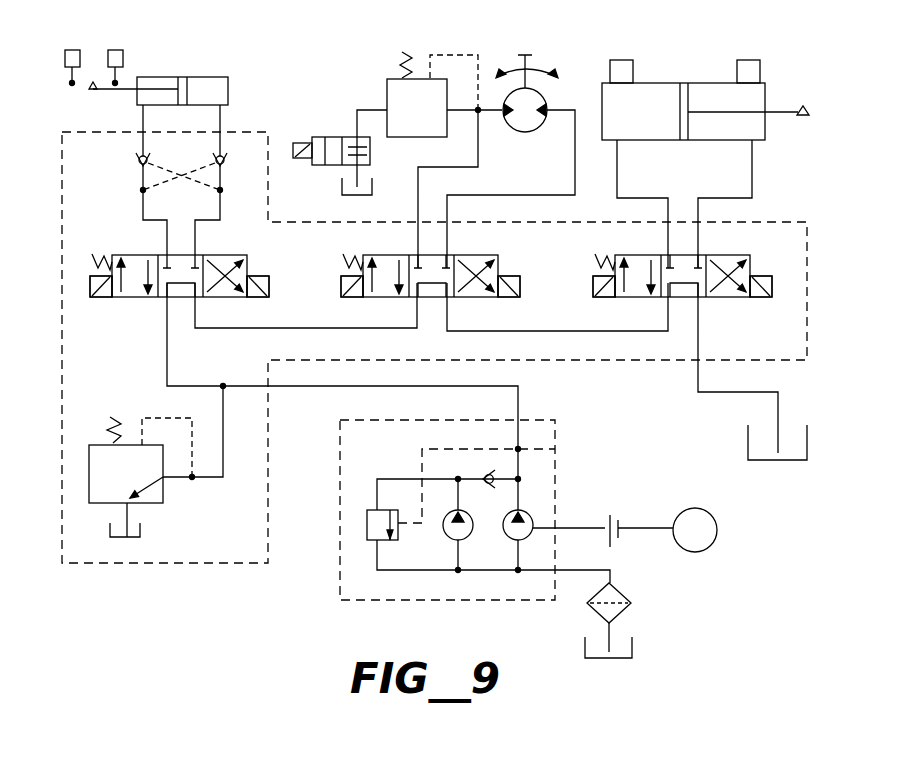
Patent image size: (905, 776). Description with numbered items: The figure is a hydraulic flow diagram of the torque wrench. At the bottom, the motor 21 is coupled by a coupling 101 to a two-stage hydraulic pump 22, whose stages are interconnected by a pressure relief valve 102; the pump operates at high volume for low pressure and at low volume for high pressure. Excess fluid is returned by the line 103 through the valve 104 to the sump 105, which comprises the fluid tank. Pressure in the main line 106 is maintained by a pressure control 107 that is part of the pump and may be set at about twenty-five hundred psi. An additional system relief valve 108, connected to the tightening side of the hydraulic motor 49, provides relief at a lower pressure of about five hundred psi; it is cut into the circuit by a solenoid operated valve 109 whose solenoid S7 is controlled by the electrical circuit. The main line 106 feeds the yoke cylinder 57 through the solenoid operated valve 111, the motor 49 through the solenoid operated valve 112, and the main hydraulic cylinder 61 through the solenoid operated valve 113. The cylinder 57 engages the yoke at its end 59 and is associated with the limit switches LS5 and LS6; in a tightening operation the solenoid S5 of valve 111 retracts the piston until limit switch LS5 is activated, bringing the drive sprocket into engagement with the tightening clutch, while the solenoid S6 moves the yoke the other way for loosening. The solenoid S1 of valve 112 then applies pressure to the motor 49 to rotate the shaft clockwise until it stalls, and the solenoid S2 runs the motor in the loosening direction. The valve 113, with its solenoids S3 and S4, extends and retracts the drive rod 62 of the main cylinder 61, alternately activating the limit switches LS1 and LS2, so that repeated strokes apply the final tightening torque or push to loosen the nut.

The yoke cylinder 57 is at (203, 75).
The yoke engagement end 59 is at (118, 92).
The limit switch LS6 is at (69, 57).
The limit switch LS5 is at (114, 57).
The limit switch LS2 is at (618, 62).
The limit switch LS1 is at (747, 62).
The main hydraulic cylinder 61 is at (662, 97).
The drive rod 62 is at (783, 117).
The system relief valve 108 is at (387, 87).
The solenoid operated valve 109 is at (320, 165).
The solenoid S7 is at (303, 139).
The hydraulic motor 49 is at (515, 133).
The solenoid operated valve 111 is at (253, 258).
The solenoid operated valve 112 is at (498, 258).
The solenoid operated valve 113 is at (752, 263).
The solenoid S1 is at (352, 301).
The solenoid S2 is at (508, 301).
The solenoid S3 is at (760, 303).
The solenoid S4 is at (604, 303).
The solenoid S5 is at (102, 299).
The solenoid S6 is at (258, 299).
The main line 106 is at (165, 355).
The pressure control 107 is at (165, 495).
The line 103 is at (422, 462).
The pressure relief valve 102 is at (493, 473).
The valve 104 is at (367, 523).
The two-stage hydraulic pump 22 is at (462, 541).
The coupling 101 is at (615, 512).
The motor 21 is at (717, 528).
The sump 105 is at (632, 643).